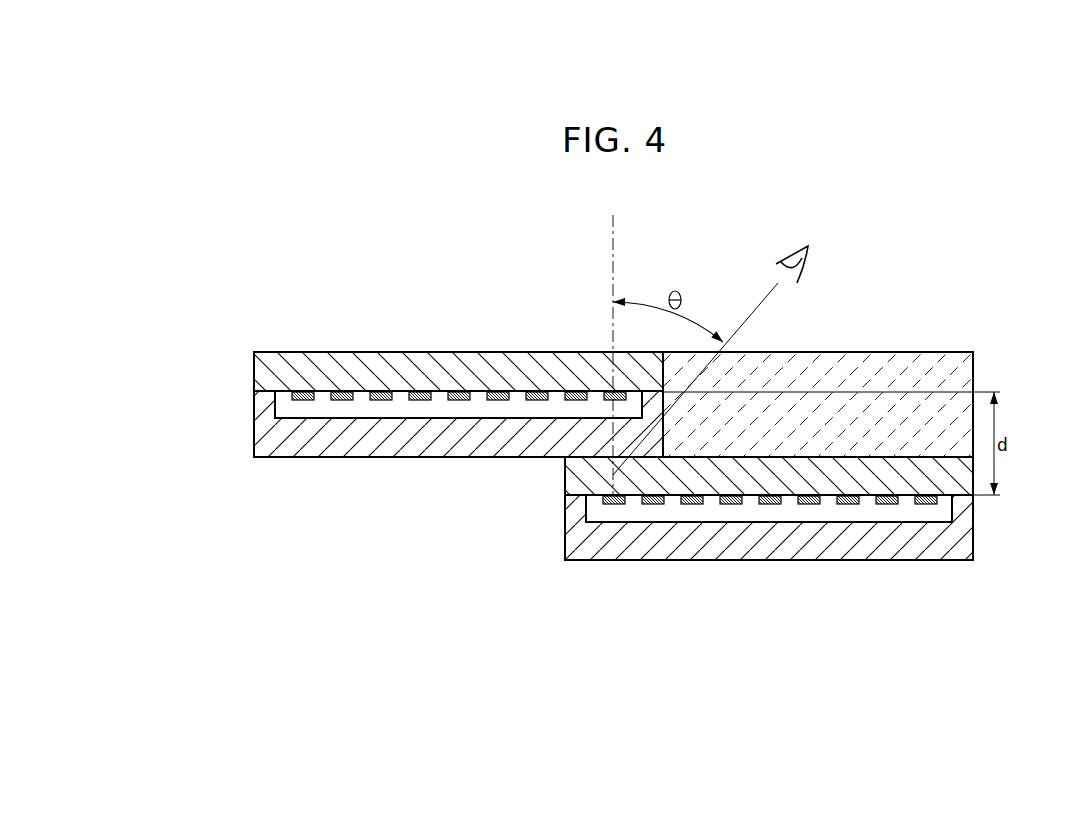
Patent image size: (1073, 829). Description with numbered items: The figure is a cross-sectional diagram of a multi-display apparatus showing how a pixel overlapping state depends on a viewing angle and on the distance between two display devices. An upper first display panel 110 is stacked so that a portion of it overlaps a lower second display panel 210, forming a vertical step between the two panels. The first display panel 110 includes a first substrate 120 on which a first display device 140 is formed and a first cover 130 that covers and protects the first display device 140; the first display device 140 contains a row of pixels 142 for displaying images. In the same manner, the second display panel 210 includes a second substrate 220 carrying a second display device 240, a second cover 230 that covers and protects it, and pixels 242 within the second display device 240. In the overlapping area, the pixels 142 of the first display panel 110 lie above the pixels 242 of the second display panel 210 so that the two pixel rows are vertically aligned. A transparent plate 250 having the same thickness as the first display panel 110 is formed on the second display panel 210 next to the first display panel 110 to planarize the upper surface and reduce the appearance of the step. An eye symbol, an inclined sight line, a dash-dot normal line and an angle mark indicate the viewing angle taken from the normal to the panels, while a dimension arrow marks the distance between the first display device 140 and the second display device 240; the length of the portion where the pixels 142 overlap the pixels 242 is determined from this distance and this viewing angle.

The first display panel 110 is at (422, 399).
The first substrate 120 is at (320, 345).
The first cover 130 is at (258, 437).
The first display device 140 is at (278, 406).
The pixels 142 is at (341, 401).
The second display panel 210 is at (809, 531).
The second substrate 220 is at (973, 475).
The second cover 230 is at (973, 540).
The second display device 240 is at (952, 510).
The pixels 242 is at (767, 505).
The transparent plate 250 is at (970, 372).